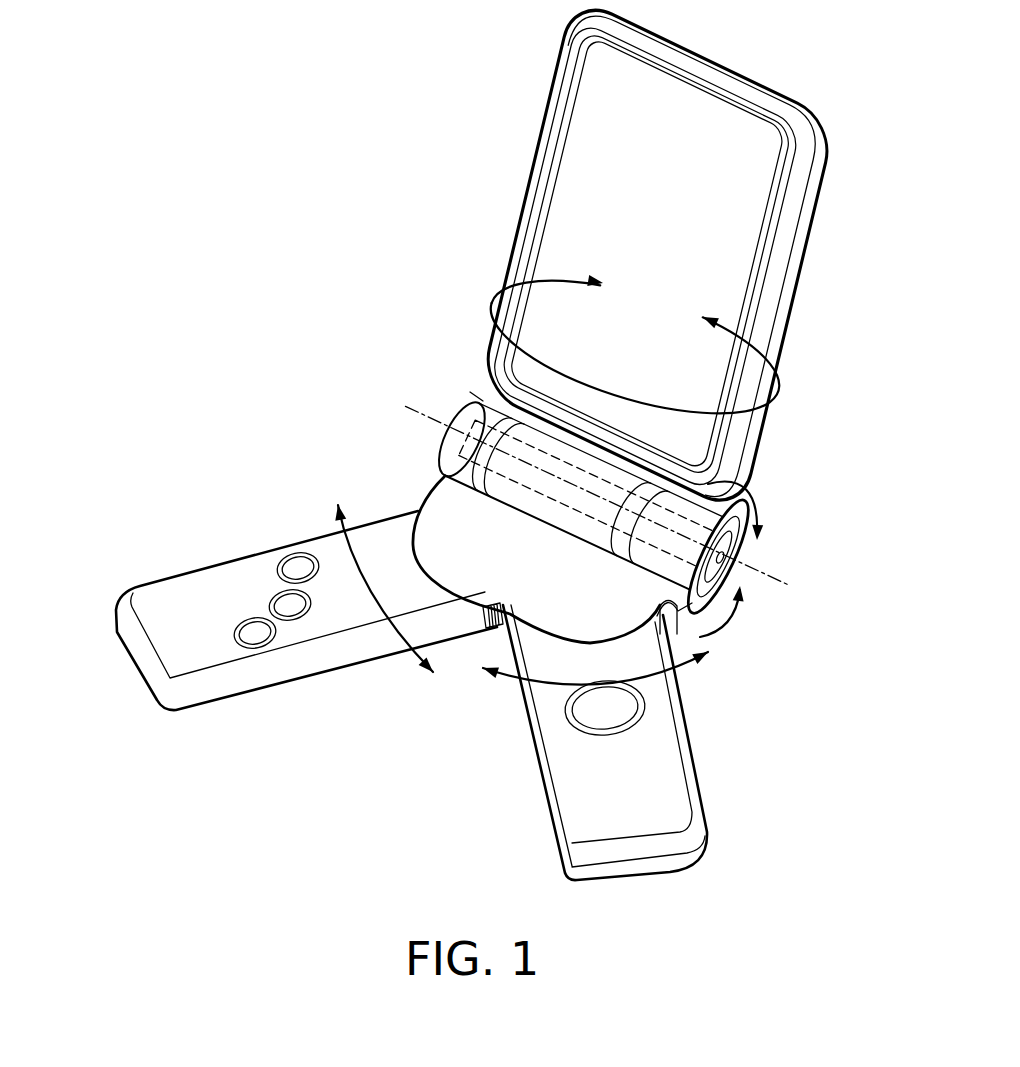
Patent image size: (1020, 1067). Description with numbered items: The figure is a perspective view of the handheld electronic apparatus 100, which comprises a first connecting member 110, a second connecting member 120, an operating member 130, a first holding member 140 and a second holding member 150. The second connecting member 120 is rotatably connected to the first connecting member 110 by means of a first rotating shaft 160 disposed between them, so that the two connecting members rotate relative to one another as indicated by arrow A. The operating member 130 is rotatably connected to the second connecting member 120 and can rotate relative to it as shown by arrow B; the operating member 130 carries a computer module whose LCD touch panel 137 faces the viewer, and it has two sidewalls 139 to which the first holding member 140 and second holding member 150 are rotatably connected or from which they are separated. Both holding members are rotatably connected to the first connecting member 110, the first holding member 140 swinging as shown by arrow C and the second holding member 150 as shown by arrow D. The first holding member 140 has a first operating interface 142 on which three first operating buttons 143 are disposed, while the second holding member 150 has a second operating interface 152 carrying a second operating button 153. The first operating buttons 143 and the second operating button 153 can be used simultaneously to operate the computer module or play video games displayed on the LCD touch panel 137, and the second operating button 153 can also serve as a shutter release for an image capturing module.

The handheld electronic apparatus 100 is at (276, 68).
The first connecting member 110 is at (445, 514).
The second connecting member 120 is at (462, 393).
The operating member 130 is at (540, 115).
The LCD touch panel 137 is at (570, 171).
The sidewalls 139 is at (518, 232).
The first holding member 140 is at (268, 592).
The first operating interface 142 is at (167, 632).
The first operating buttons 143 is at (298, 568).
The second holding member 150 is at (634, 741).
The second operating interface 152 is at (583, 793).
The second operating button 153 is at (583, 712).
The first rotating shaft 160 is at (472, 423).